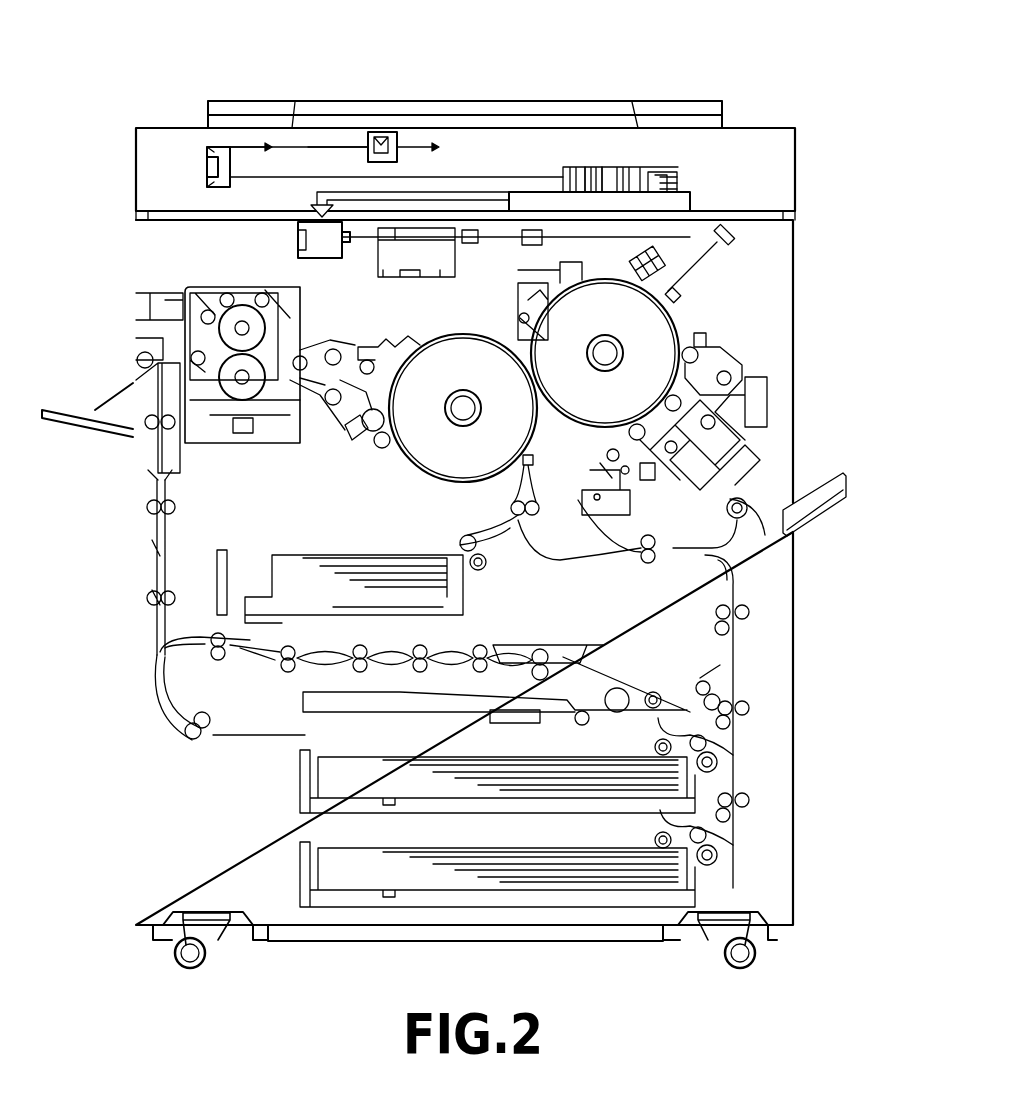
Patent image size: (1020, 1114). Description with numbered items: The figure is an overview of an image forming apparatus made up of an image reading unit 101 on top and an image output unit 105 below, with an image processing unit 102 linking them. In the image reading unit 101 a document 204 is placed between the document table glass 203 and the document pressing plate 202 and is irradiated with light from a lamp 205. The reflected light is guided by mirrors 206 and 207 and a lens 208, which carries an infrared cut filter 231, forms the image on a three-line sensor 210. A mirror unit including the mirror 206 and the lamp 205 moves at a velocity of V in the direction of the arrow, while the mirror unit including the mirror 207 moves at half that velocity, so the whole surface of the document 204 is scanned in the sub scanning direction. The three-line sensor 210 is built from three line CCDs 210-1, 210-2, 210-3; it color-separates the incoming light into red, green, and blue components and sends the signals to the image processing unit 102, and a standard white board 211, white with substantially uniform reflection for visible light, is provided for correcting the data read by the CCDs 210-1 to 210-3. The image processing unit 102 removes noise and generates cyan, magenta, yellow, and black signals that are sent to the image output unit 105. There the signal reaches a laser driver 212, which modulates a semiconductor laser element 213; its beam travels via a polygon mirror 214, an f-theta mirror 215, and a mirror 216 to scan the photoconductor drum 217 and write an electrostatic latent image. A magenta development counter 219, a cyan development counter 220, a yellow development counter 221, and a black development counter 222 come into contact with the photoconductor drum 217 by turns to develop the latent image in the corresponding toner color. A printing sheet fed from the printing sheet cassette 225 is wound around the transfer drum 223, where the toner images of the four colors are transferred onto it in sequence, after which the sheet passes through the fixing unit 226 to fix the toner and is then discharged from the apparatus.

The image reading unit 101 is at (806, 184).
The image processing unit 102 is at (708, 207).
The image output unit 105 is at (806, 391).
The document pressing plate 202 is at (535, 101).
The document table glass 203 is at (612, 127).
The document 204 is at (473, 127).
The lamp 205 is at (377, 138).
The mirror 206 is at (393, 143).
The mirror 207 is at (207, 178).
The lens 208 is at (590, 167).
The three-line sensor 210 is at (655, 174).
The CCD 210-1 is at (664, 177).
The CCD 210-2 is at (664, 183).
The CCD 210-3 is at (664, 189).
The standard white board 211 is at (258, 128).
The laser driver 212 is at (298, 240).
The semiconductor laser element 213 is at (350, 244).
The polygon mirror 214 is at (450, 243).
The f-θ mirror 215 is at (542, 240).
The mirror 216 is at (730, 242).
The photoconductor drum 217 is at (677, 328).
The magenta development counter 219 is at (630, 470).
The cyan development counter 220 is at (680, 410).
The yellow development counter 221 is at (700, 360).
The black development counter 222 is at (585, 440).
The transfer drum 223 is at (413, 463).
The printing sheet cassette 225 is at (672, 808).
The fixing unit 226 is at (241, 443).
The infrared cut filter 231 is at (570, 167).